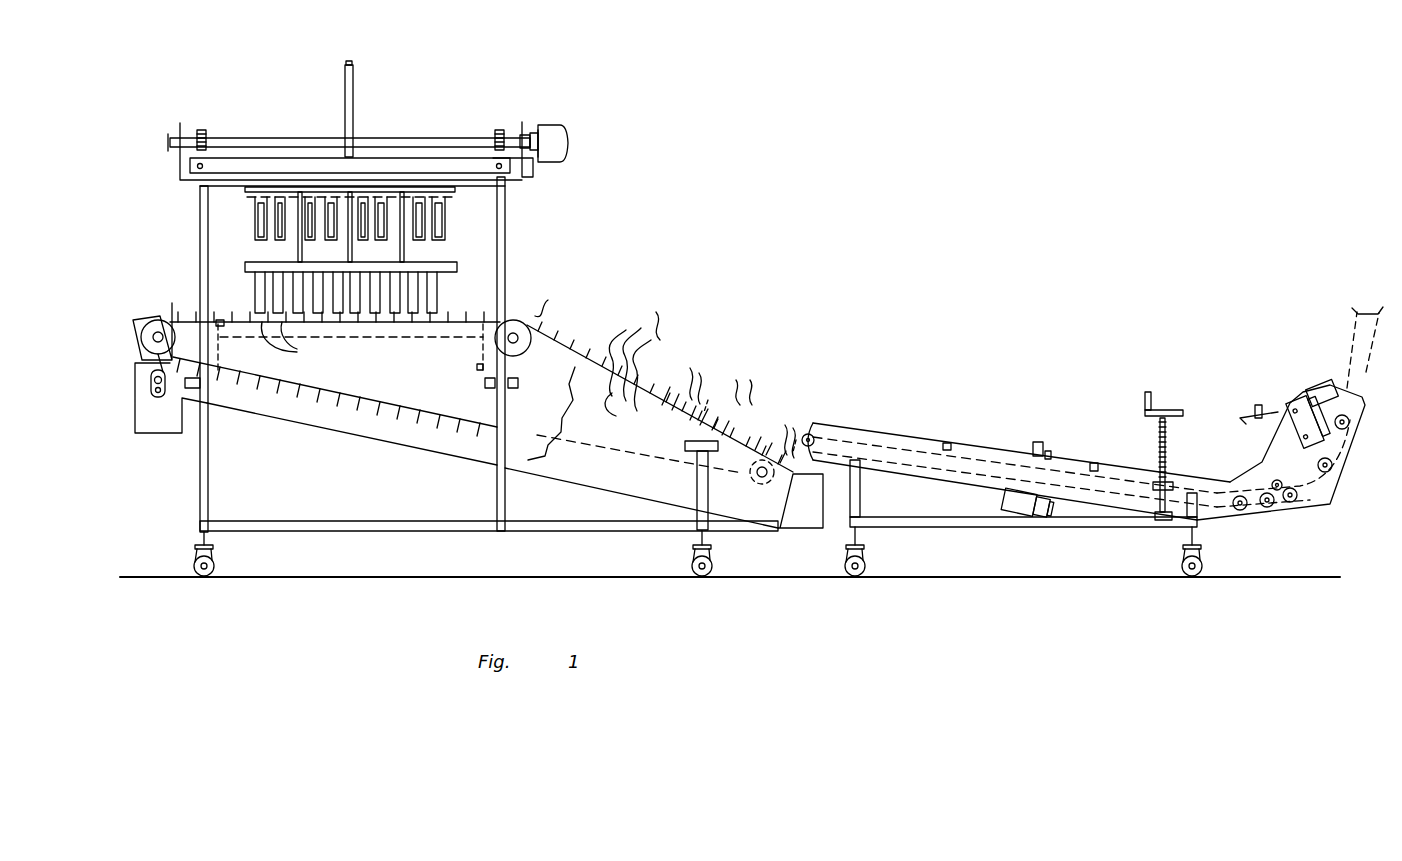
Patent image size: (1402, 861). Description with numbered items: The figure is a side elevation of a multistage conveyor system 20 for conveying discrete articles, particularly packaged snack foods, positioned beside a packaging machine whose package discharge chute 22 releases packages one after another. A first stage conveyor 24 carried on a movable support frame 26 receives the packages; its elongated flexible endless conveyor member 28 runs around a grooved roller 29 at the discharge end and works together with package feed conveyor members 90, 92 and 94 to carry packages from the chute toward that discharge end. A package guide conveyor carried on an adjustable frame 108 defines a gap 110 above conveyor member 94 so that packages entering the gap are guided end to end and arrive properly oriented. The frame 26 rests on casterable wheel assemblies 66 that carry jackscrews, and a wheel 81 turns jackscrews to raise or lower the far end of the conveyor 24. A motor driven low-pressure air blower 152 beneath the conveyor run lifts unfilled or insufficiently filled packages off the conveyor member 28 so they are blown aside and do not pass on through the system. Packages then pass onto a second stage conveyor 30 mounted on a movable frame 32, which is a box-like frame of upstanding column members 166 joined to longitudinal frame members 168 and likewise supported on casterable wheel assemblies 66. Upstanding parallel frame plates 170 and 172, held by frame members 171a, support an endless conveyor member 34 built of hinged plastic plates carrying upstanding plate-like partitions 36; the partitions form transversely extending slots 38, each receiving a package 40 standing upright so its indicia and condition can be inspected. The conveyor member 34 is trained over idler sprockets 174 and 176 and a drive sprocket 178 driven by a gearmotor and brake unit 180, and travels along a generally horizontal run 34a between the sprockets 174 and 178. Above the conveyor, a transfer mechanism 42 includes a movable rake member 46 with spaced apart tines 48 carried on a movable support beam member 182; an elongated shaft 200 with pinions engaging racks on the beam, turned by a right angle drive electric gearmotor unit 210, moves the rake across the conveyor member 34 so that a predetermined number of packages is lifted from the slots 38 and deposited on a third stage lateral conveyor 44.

The conveyor system 20 is at (723, 261).
The package discharge chute 22 is at (1347, 325).
The first stage conveyor 24 is at (1016, 462).
The movable support frame 26 is at (1022, 523).
The endless conveyor member 28 is at (867, 437).
The grooved roller 29 is at (808, 434).
The second stage conveyor 30 is at (664, 411).
The movable frame 32 is at (489, 395).
The endless conveyor member 34 is at (452, 316).
The horizontal run 34a is at (231, 318).
The partitions 36 is at (536, 315).
The slots 38 is at (628, 377).
The package 40 is at (703, 357).
The transfer mechanism 42 is at (386, 215).
The third stage lateral conveyor 44 is at (388, 340).
The rake member 46 is at (443, 262).
The tines 48 is at (291, 343).
The casterable wheel assemblies 66 is at (212, 562).
The wheel 81 is at (1163, 410).
The package feed conveyor member 90 is at (1287, 520).
The package feed conveyor member 92 is at (1297, 426).
The package feed conveyor member 94 is at (1360, 448).
The frame 108 is at (1302, 388).
The gap 110 is at (1327, 373).
The air blower 152 is at (1001, 497).
The column members 166 is at (209, 471).
The longitudinal frame members 168 is at (331, 533).
The frame plate 170 is at (308, 369).
The frame members 171a is at (698, 493).
The frame plate 172 is at (540, 469).
The idler sprocket 174 is at (504, 362).
The idler sprocket 176 is at (762, 484).
The drive sprocket 178 is at (140, 341).
The gearmotor and brake unit 180 is at (155, 313).
The support beam member 182 is at (299, 156).
The shaft 200 is at (381, 152).
The gearmotor unit 210 is at (550, 122).